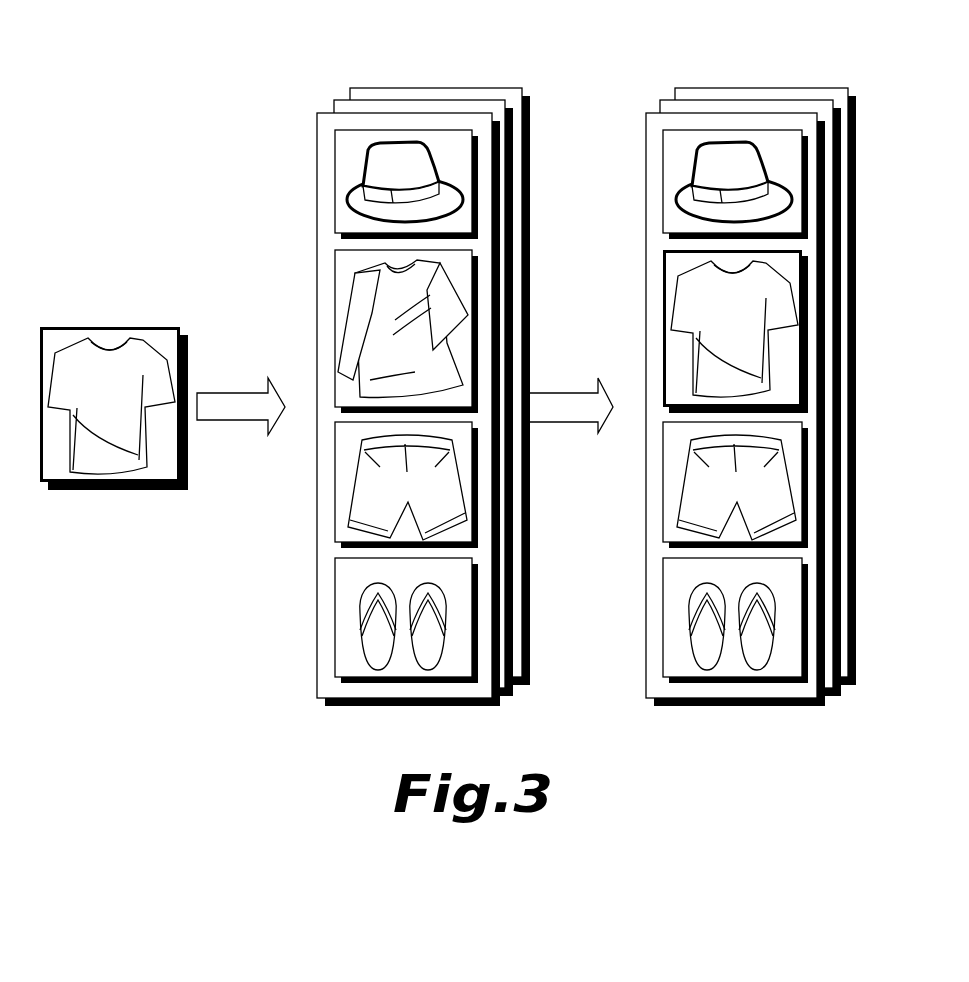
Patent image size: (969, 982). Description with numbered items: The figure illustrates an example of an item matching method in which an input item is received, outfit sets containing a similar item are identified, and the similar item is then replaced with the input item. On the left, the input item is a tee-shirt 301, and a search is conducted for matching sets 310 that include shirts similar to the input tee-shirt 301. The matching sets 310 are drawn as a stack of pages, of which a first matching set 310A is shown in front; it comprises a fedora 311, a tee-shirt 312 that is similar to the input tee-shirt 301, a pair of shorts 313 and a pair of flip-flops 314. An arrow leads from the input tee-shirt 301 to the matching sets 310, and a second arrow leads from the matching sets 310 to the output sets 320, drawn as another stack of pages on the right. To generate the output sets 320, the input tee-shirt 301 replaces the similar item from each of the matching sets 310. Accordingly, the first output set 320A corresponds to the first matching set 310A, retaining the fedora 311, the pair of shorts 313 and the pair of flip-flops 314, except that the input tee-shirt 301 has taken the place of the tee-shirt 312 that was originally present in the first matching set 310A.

The input tee-shirt 301 is at (120, 327).
The matching sets 310 is at (527, 70).
The first matching set 310A is at (317, 128).
The fedora 311 is at (333, 183).
The tee-shirt 312 is at (333, 290).
The pair of shorts 313 is at (333, 485).
The pair of flip-flops 314 is at (333, 620).
The output sets 320 is at (855, 77).
The first output set 320A is at (646, 138).